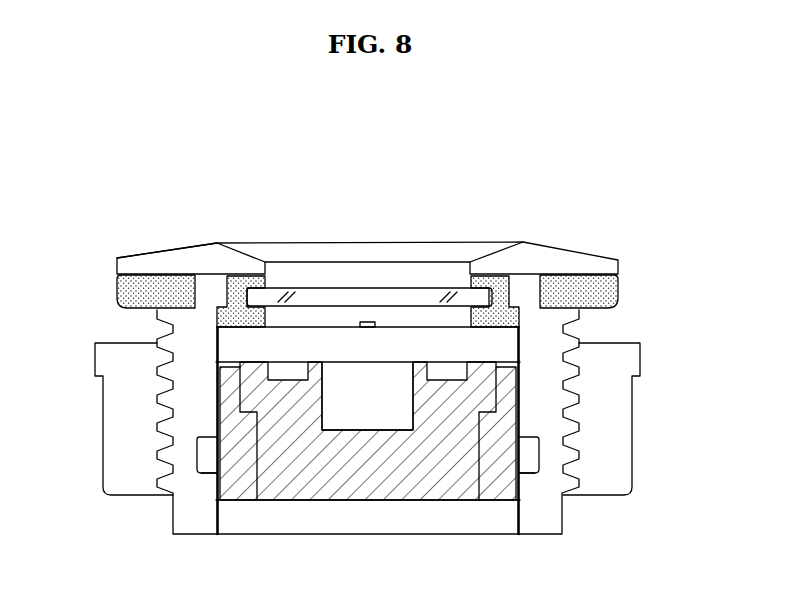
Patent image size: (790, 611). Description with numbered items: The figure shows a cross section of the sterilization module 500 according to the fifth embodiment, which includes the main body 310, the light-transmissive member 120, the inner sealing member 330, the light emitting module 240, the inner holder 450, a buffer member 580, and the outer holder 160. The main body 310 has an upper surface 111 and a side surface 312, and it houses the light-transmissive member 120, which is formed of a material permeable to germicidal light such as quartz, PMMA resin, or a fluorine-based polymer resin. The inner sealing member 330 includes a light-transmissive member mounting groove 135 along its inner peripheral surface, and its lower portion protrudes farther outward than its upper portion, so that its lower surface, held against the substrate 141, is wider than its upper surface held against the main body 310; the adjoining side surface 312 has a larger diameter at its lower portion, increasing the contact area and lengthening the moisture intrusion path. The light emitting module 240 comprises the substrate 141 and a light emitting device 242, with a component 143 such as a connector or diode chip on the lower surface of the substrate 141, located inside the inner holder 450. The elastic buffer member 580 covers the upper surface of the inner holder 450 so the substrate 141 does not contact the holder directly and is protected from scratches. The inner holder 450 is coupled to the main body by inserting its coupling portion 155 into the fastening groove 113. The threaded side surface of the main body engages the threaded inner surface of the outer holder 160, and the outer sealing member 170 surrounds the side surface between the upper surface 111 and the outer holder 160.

The sterilization module 500 is at (95, 153).
The upper surface 111 is at (585, 259).
The light-transmissive member mounting groove 135 is at (240, 273).
The main body 310 is at (585, 201).
The side surface 312 is at (533, 321).
The outer sealing member 170 is at (609, 292).
The inner sealing member 330 is at (263, 275).
The light-transmissive member 120 is at (447, 288).
The light emitting module 240 is at (407, 196).
The substrate 141 is at (308, 353).
The light emitting device 242 is at (365, 322).
The component 143 is at (398, 370).
The buffer member 580 is at (217, 351).
The inner holder 450 is at (313, 484).
The coupling portion 155 is at (208, 450).
The fastening groove 113 is at (205, 472).
The outer holder 160 is at (620, 427).